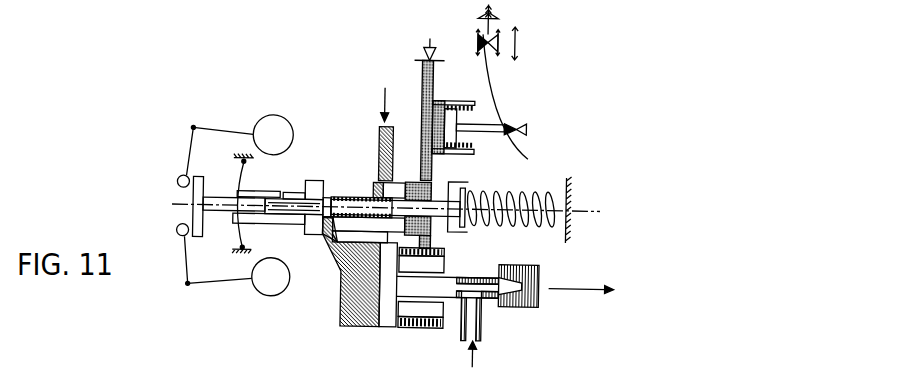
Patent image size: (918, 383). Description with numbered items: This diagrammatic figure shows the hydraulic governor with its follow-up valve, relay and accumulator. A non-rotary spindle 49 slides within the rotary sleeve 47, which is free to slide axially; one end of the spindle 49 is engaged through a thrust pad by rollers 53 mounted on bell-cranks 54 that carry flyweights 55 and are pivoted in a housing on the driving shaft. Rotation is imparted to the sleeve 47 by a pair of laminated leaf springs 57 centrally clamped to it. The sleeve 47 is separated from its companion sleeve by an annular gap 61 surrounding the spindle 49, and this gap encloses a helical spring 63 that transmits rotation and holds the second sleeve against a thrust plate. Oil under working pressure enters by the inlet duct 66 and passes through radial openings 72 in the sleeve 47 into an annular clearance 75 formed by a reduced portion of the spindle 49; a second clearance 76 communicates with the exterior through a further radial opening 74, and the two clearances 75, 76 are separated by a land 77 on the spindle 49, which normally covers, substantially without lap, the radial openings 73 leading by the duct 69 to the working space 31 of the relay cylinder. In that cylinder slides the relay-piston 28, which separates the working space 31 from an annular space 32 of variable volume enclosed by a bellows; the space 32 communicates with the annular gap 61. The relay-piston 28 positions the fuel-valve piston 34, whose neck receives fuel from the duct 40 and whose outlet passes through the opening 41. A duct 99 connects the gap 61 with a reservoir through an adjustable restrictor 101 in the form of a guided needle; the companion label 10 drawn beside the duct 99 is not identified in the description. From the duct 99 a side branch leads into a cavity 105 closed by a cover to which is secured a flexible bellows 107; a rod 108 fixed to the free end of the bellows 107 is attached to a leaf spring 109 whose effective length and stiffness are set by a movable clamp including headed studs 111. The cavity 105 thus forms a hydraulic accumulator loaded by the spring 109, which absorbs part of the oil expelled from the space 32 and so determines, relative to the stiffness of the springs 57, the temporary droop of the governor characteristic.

The spring housing 10 is at (425, 171).
The relay-piston 28 is at (390, 318).
The working space 31 is at (357, 318).
The annular space 32 is at (424, 328).
The fuel-valve piston 34 is at (522, 306).
The duct 40 is at (451, 321).
The opening 41 is at (581, 282).
The rotary sleeve 47 is at (348, 196).
The non-rotary spindle 49 is at (223, 213).
The rollers 53 is at (178, 180).
The bell-cranks 54 is at (268, 120).
The flyweights 55 is at (281, 128).
The laminated leaf springs 57 is at (238, 181).
The annular gap 61 is at (411, 200).
The helical spring 63 is at (433, 240).
The inlet duct 66 is at (399, 105).
The duct 69 is at (328, 249).
The radial openings 72 is at (390, 172).
The radial openings 73 is at (318, 241).
The radial opening 74 is at (280, 194).
The annular clearance 75 is at (363, 195).
The annular clearance 76 is at (300, 195).
The land 77 is at (327, 199).
The duct 99 is at (420, 76).
The adjustable restrictor 101 is at (421, 45).
The cavity 105 is at (440, 104).
The flexible bellows 107 is at (470, 148).
The rod 108 is at (503, 123).
The leaf spring 109 is at (500, 100).
The headed studs 111 is at (516, 32).